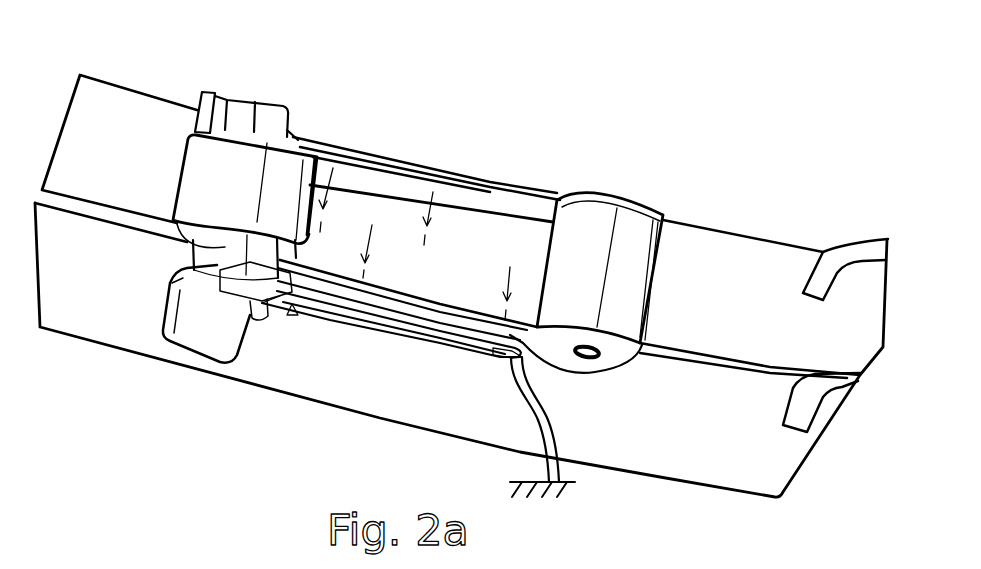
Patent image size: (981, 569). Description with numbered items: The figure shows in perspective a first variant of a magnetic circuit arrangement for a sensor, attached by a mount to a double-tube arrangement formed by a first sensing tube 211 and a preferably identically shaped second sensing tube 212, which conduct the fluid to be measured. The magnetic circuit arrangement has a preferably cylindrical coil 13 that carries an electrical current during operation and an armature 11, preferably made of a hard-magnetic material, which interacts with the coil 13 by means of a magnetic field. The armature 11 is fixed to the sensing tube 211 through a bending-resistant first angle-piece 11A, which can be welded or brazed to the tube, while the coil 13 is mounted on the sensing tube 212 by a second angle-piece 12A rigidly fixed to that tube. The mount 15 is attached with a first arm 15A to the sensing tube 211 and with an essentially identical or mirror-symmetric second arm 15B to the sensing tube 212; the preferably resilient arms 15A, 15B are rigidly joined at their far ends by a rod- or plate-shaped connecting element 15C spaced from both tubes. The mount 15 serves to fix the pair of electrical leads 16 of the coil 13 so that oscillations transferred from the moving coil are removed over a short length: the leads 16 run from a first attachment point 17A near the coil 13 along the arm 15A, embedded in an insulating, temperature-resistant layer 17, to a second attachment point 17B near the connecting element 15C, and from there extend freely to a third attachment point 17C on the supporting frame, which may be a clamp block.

The armature 11 is at (312, 133).
The first angle-piece 11A is at (216, 108).
The second angle-piece 12A is at (183, 330).
The coil 13 is at (213, 243).
The mount 15 is at (598, 180).
The first arm 15A is at (380, 340).
The second arm 15B is at (402, 160).
The connecting element 15C is at (633, 277).
The electrical leads 16 is at (548, 410).
The insulating layer 17 is at (347, 323).
The first attachment point 17A is at (298, 318).
The second attachment point 17B is at (493, 353).
The third attachment point 17C is at (567, 482).
The first sensing tube 211 is at (323, 388).
The second sensing tube 212 is at (728, 248).